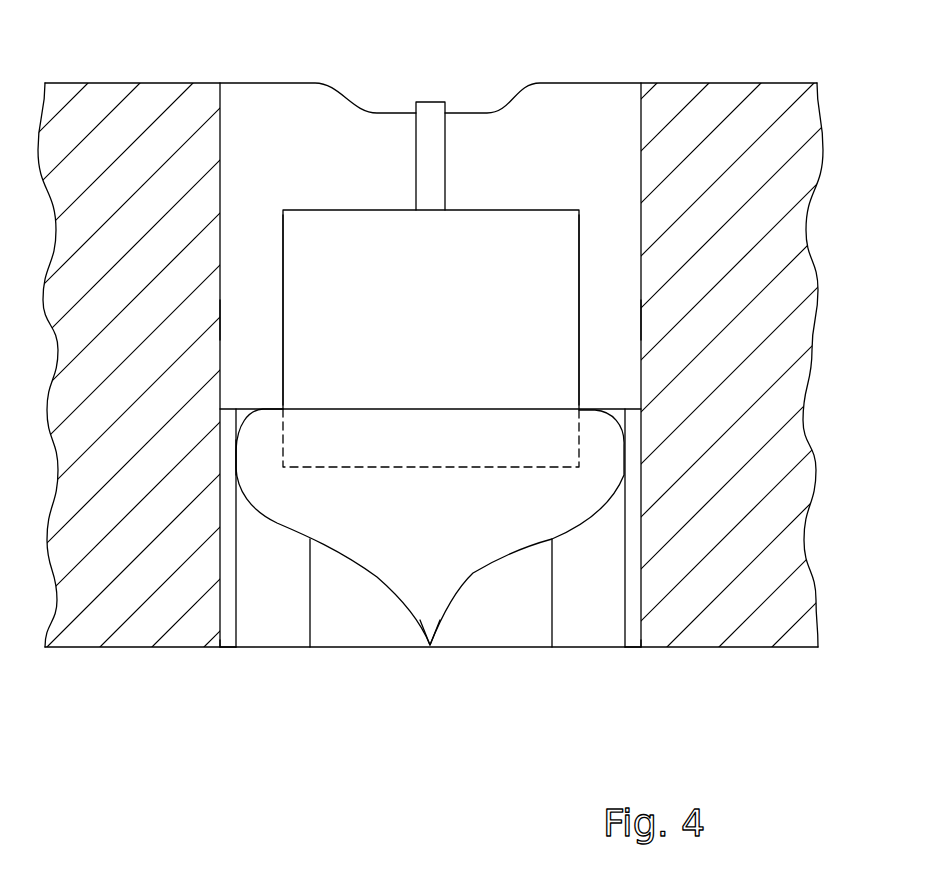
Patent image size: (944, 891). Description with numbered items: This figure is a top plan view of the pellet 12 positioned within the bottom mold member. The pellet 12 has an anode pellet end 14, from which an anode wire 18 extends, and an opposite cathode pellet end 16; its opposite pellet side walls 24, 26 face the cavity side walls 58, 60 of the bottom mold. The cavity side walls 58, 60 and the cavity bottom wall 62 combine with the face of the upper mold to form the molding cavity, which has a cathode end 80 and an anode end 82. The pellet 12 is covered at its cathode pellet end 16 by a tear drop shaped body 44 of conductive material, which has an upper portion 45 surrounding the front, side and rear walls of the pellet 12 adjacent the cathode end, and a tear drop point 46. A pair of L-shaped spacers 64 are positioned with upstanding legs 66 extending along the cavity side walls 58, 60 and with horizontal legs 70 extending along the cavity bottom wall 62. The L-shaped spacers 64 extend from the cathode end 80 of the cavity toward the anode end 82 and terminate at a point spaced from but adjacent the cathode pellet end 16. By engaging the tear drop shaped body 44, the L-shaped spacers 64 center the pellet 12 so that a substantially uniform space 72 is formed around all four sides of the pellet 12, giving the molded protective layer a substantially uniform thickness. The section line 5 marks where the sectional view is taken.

The anode pellet end 14 is at (266, 78).
The anode wire 18 is at (419, 98).
The anode end of the cavity 82 is at (560, 103).
The cavity side wall 58 is at (228, 135).
The cavity side wall 60 is at (634, 137).
The cavity bottom wall 62 is at (501, 179).
The pellet 12 is at (276, 204).
The pellet side wall 24 is at (277, 229).
The pellet side wall 26 is at (586, 243).
The uniform space 72 is at (246, 323).
The section line 5- 5 is at (220, 423).
The tear drop shaped body 44 is at (397, 403).
The cathode pellet end 16 is at (399, 474).
The upper portion 45 is at (232, 458).
The tear drop point 46 is at (438, 653).
The upstanding leg 66 is at (228, 559).
The horizontal leg 70 is at (431, 593).
The cathode end of the cavity 80 is at (540, 654).
The L-shaped spacer 64 is at (225, 654).